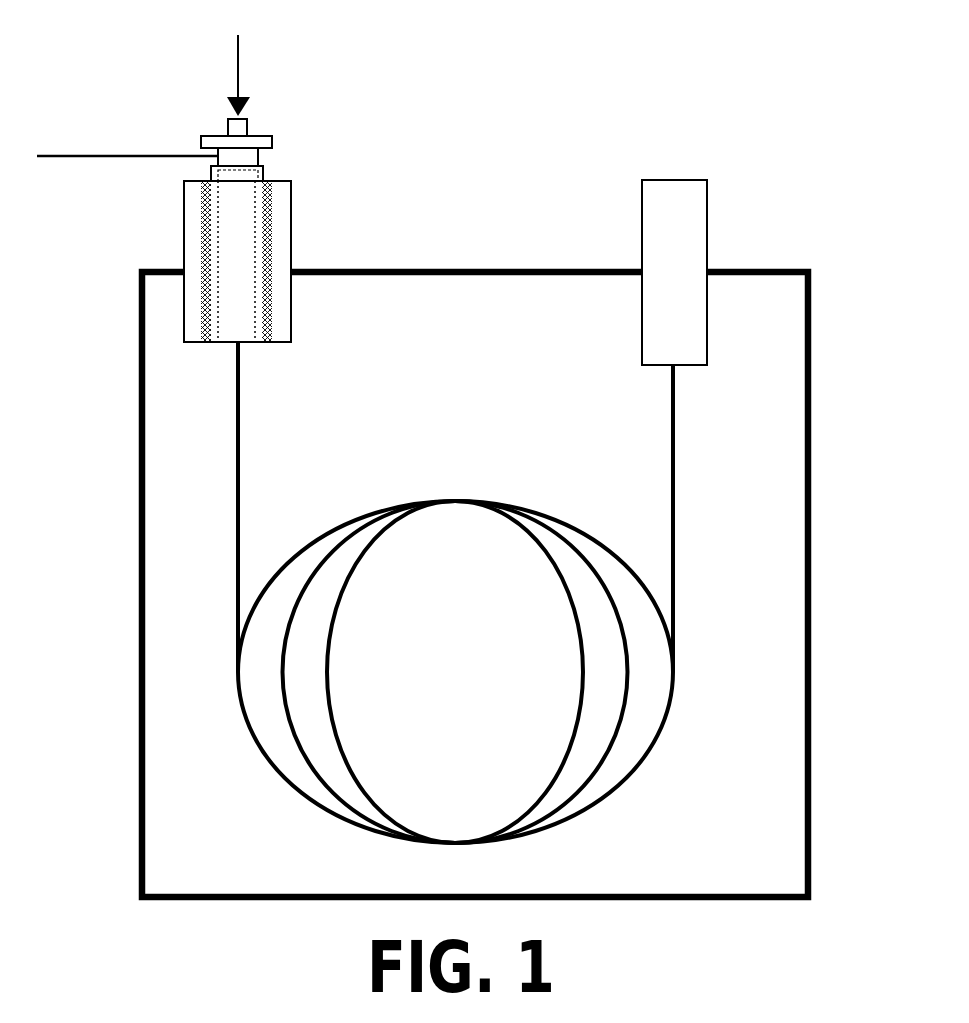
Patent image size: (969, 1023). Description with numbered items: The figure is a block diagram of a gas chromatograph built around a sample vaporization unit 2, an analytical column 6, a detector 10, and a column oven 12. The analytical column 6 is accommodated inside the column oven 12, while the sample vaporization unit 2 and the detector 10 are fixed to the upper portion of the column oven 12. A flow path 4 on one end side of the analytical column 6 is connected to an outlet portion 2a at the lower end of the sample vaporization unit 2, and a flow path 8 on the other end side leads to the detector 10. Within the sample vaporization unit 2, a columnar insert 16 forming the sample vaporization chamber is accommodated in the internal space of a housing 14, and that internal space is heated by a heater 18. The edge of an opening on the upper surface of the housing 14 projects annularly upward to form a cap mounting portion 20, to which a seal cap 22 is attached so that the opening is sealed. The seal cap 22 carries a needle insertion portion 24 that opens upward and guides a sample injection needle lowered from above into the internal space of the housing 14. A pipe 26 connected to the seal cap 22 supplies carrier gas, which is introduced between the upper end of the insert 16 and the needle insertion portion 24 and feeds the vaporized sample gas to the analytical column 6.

The sample vaporization unit 2 is at (208, 188).
The outlet portion 2a is at (238, 343).
The flow path 4 is at (240, 485).
The analytical column 6 is at (455, 498).
The flow path 8 is at (676, 485).
The detector 10 is at (708, 205).
The column oven 12 is at (812, 340).
The housing 14 is at (292, 205).
The insert 16 is at (237, 260).
The heater 18 is at (200, 253).
The cap mounting portion 20 is at (267, 170).
The seal cap 22 is at (260, 155).
The needle insertion portion 24 is at (247, 120).
The pipe 26 is at (110, 155).